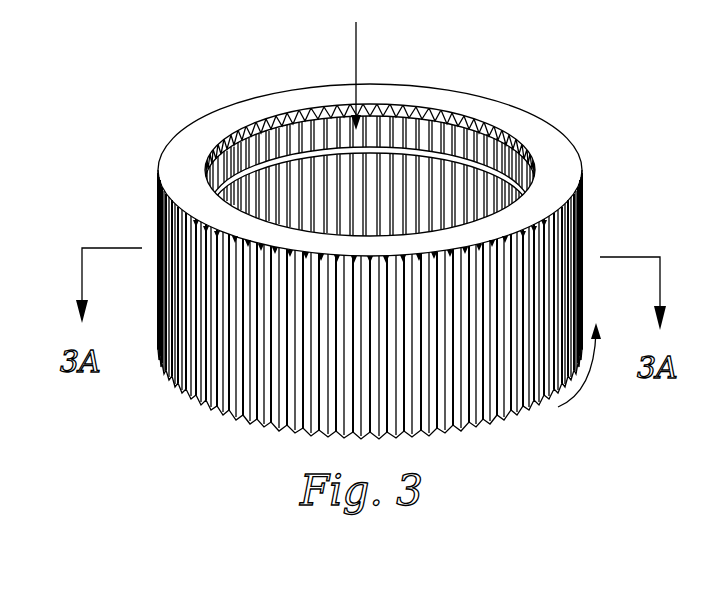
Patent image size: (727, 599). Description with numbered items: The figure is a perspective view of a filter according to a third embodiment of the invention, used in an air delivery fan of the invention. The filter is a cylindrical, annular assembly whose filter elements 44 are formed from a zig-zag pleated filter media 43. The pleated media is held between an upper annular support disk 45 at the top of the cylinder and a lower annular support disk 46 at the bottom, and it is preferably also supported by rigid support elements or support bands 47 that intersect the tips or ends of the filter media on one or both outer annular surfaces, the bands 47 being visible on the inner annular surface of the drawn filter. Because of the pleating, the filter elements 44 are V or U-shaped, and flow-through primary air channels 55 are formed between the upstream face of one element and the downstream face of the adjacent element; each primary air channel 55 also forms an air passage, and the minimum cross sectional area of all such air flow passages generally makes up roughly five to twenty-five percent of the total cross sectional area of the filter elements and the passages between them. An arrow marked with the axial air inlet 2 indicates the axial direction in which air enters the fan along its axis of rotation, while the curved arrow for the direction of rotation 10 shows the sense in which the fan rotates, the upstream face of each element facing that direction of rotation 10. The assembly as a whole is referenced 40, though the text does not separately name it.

The axial air inlet 2 is at (352, 48).
The direction of rotation 10 is at (577, 395).
The rotor wheel assembly 40 is at (399, 261).
The zig-zag pleated filter media 43 is at (465, 382).
The filter element 44 is at (578, 206).
The upper annular support disk 45 is at (510, 118).
The lower annular support disk 46 is at (254, 400).
The support bands 47 is at (451, 128).
The primary flow channel 55 is at (205, 357).